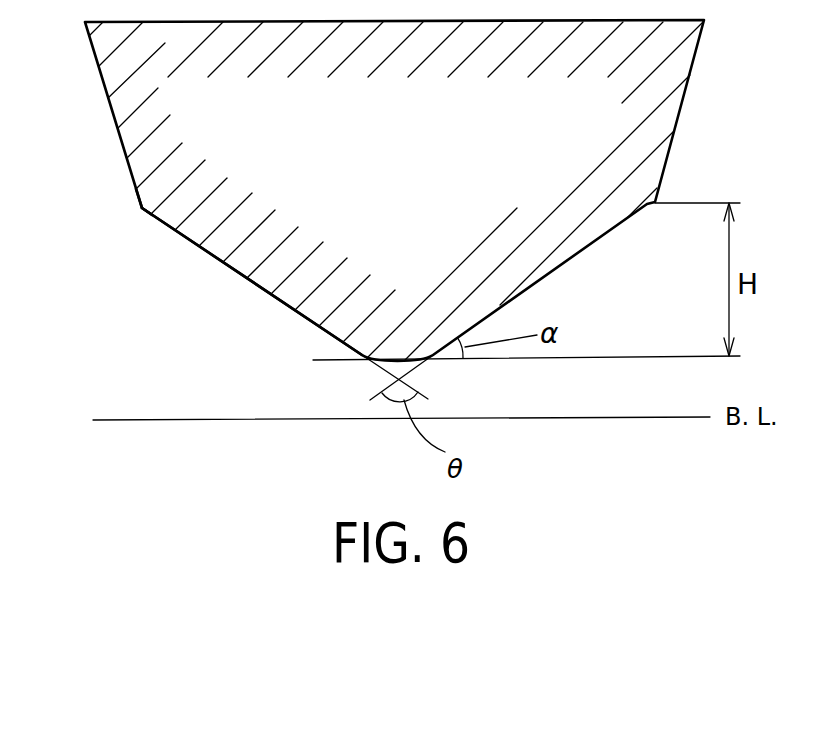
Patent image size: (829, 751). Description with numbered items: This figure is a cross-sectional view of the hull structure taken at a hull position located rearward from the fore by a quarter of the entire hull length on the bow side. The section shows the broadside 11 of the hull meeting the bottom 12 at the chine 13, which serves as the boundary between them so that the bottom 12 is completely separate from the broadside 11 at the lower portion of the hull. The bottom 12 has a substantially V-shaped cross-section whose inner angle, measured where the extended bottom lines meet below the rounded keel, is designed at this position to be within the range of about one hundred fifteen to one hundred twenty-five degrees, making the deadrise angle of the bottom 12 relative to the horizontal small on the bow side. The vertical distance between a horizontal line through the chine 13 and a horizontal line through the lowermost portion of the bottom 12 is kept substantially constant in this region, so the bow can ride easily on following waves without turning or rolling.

The broadside 11 is at (120, 128).
The bottom 12 is at (223, 260).
The chine 13 is at (141, 210).